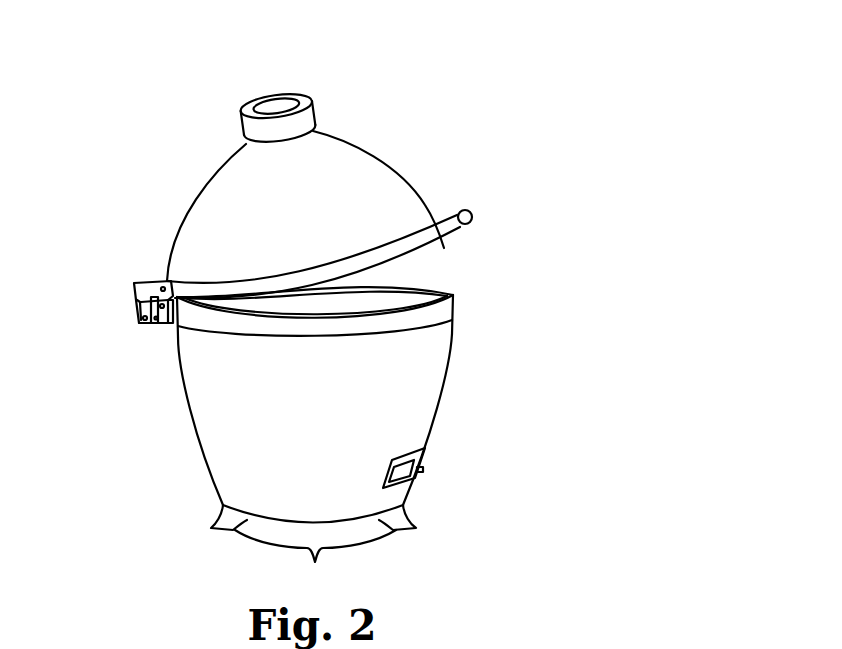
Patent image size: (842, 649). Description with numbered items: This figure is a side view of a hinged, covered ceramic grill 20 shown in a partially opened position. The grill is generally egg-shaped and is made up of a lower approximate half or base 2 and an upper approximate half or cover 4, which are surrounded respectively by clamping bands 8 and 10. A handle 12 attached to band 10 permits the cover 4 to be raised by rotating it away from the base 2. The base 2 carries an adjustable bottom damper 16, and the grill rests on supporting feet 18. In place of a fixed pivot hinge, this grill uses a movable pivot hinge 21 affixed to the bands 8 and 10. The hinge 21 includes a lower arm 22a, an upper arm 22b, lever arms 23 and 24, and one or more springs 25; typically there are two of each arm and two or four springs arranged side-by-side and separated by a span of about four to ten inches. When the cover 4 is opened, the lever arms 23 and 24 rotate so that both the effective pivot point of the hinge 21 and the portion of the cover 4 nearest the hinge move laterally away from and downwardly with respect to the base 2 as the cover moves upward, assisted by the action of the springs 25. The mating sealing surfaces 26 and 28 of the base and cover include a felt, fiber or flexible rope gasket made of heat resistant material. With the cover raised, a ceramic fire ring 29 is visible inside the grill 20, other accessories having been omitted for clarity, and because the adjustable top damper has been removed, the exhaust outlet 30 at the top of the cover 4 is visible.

The base 2 is at (430, 382).
The cover 4 is at (412, 186).
The clamping band 8 is at (417, 322).
The clamping band 10 is at (437, 242).
The handle 12 is at (482, 202).
The adjustable bottom damper 16 is at (410, 474).
The supporting feet 18 is at (313, 548).
The ceramic grill 20 is at (412, 92).
The movable pivot hinge 21 is at (118, 319).
The lower arm 22a is at (168, 323).
The upper arm 22b is at (150, 286).
The lever arm 23 is at (150, 328).
The lever arm 24 is at (150, 288).
The spring 25 is at (142, 308).
The sealing surface 26 is at (447, 292).
The sealing surface 28 is at (425, 257).
The ceramic fire ring 29 is at (423, 311).
The exhaust outlet 30 is at (279, 101).